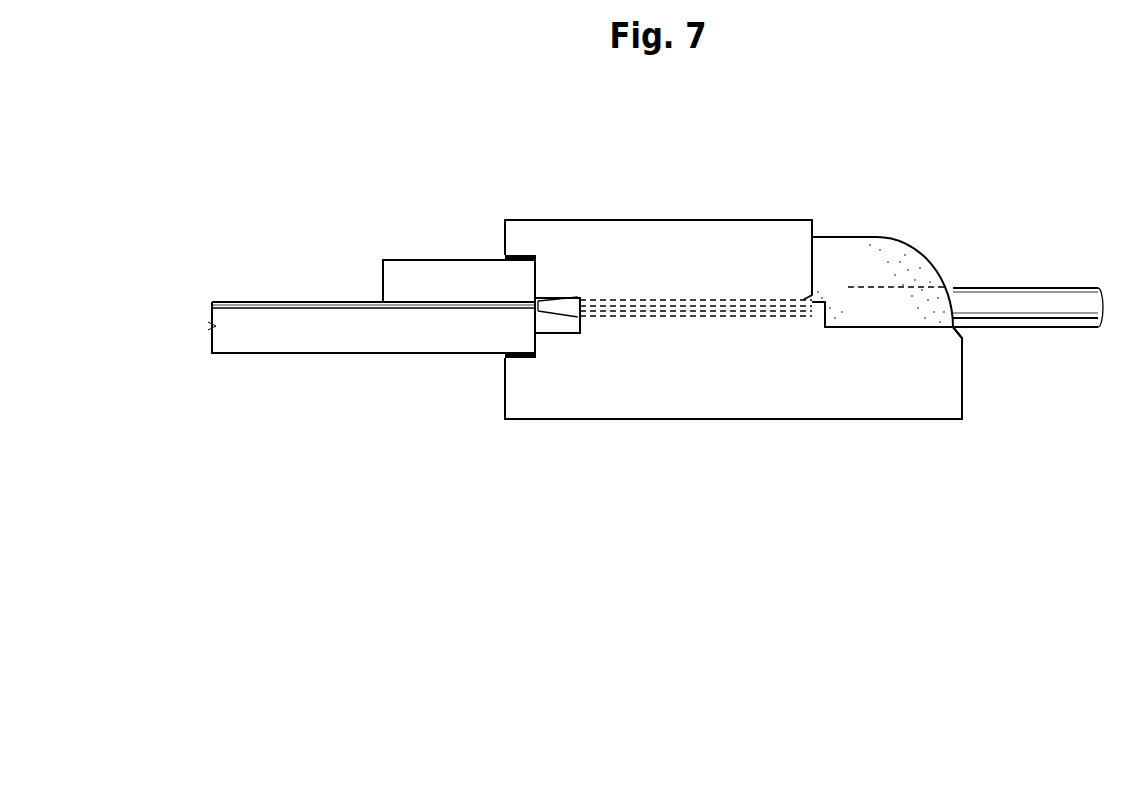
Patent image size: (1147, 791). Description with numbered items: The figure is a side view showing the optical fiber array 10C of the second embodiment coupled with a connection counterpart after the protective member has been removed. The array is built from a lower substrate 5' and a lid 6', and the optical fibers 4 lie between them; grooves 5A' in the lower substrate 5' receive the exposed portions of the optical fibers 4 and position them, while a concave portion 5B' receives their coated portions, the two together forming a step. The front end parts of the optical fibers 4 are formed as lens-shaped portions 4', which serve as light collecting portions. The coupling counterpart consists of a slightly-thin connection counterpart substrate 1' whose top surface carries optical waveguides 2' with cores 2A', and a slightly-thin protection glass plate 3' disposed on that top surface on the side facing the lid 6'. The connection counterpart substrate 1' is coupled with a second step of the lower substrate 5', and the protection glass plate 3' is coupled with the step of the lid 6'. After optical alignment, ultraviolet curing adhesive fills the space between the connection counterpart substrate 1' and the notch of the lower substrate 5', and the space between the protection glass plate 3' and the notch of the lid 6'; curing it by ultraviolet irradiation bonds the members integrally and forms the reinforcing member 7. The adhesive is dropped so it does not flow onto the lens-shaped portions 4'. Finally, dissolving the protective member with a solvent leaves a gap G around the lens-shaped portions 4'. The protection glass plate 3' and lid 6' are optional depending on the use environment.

The connection counterpart substrate 1' is at (371, 364).
The optical waveguides 2' is at (373, 262).
The cores 2A' is at (373, 263).
The protection glass plate 3' is at (459, 273).
The lens-shaped portions 4' is at (557, 385).
The gap G is at (575, 323).
The optical fibers 4 is at (841, 273).
The lower substrate 5' is at (733, 388).
The grooves 5A' is at (844, 252).
The concave portion 5B' is at (893, 400).
The lid 6' is at (658, 225).
The reinforcing member 7 is at (897, 267).
The optical fiber array 10C is at (960, 150).